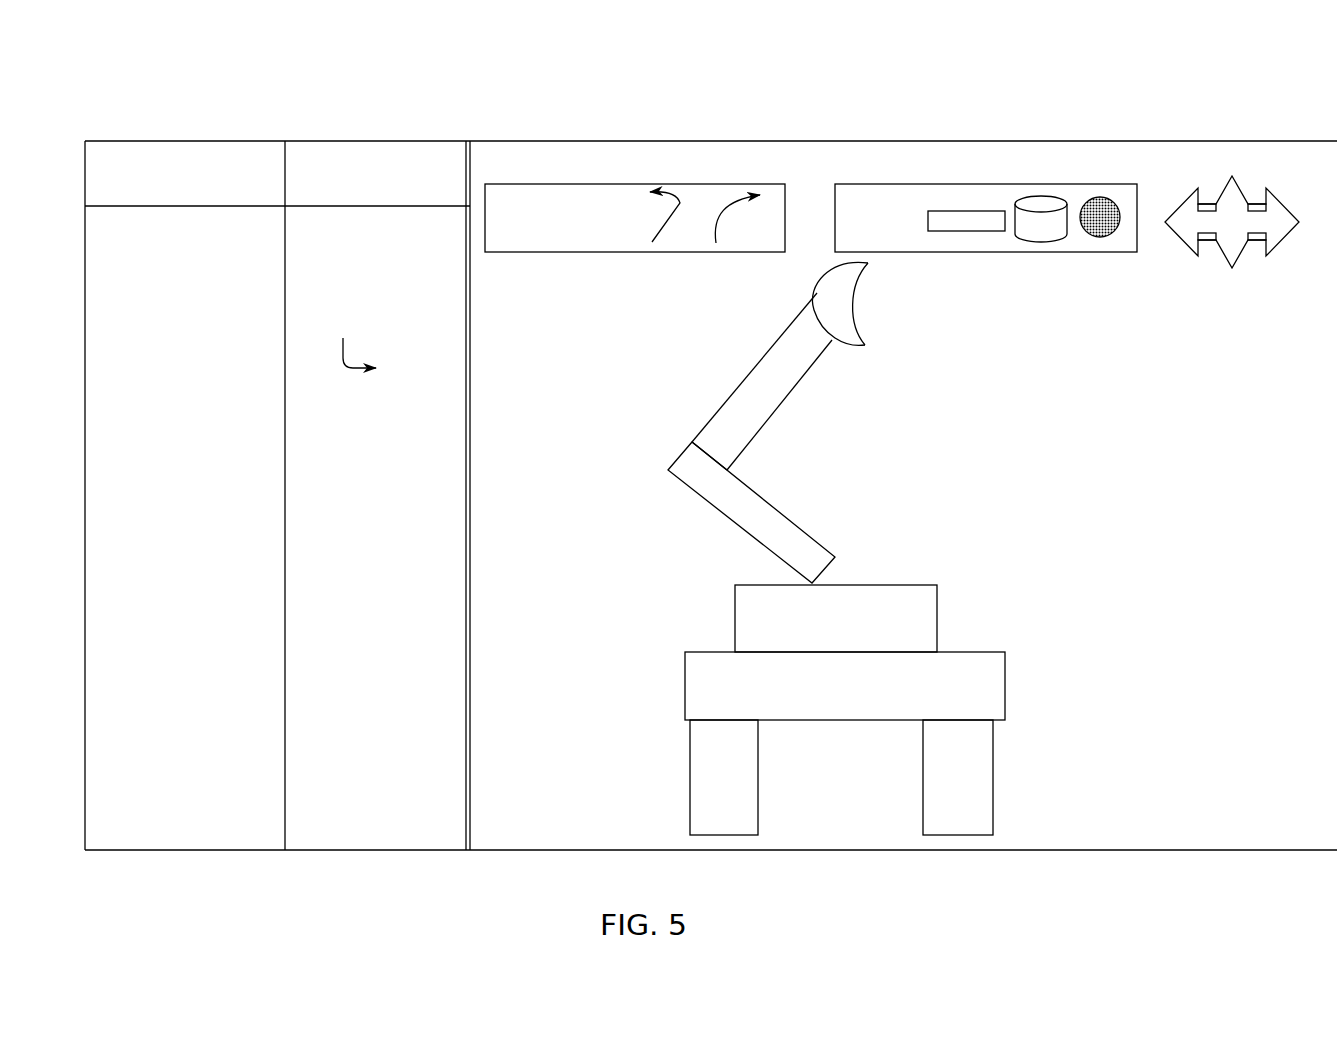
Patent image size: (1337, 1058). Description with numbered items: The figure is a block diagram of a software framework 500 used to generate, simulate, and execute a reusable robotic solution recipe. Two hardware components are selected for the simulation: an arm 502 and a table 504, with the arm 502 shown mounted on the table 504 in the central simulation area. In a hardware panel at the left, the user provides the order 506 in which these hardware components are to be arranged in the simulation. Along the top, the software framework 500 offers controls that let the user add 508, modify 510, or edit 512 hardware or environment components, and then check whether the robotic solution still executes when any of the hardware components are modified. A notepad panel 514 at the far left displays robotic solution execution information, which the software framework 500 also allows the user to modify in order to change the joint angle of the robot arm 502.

The software framework 500 is at (551, 85).
The arm 502 is at (785, 398).
The table 504 is at (845, 710).
The order 506 is at (352, 375).
The add 508 is at (885, 236).
The modify 510 is at (1228, 277).
The edit 512 is at (537, 236).
The notepad code 514 is at (183, 387).